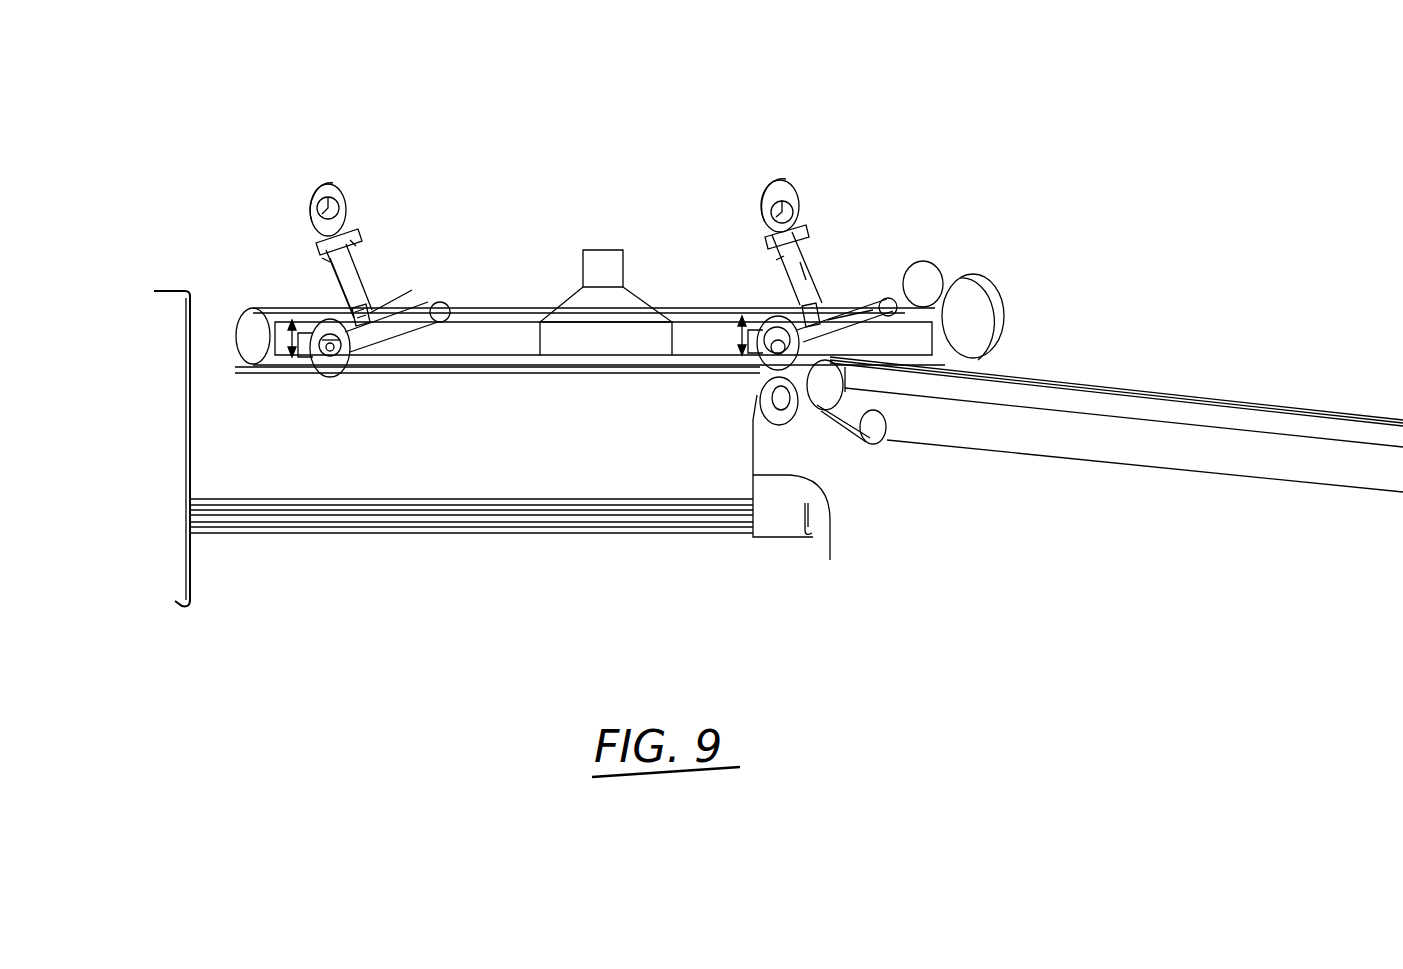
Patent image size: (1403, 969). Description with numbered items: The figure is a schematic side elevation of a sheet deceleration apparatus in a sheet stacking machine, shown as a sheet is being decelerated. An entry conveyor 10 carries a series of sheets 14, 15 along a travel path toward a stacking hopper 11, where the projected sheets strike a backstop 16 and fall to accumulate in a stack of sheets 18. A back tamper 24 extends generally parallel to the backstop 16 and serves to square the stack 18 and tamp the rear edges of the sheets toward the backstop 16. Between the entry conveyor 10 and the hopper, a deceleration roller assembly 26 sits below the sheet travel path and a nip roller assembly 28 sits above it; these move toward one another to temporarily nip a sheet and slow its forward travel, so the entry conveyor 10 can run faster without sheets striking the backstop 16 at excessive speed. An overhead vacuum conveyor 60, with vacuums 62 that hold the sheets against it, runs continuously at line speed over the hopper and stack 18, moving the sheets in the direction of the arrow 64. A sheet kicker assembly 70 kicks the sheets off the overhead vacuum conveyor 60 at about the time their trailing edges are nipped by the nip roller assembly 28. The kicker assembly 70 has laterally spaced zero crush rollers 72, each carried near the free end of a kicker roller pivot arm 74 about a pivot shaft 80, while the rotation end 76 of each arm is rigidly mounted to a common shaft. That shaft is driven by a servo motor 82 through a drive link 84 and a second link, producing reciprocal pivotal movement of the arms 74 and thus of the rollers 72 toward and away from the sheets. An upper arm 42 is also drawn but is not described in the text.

The entry conveyor 10 is at (1255, 392).
The stacking hopper 11 is at (244, 462).
The sheet 14 is at (390, 378).
The sheet 15 is at (1012, 370).
The backstop 16 is at (186, 362).
The stack of sheets 18 is at (345, 535).
The back tamper 24 is at (830, 560).
The deceleration roller assembly 26 is at (793, 411).
The nip roller assembly 28 is at (778, 318).
The actuator arm 42 is at (782, 178).
The overhead vacuum conveyor 60 is at (602, 355).
The vacuum 62 is at (604, 250).
The arrow 64 is at (637, 388).
The sheet kicker assembly 70 is at (372, 306).
The roller 72 is at (318, 366).
The kicker roller pivot arm 74 is at (415, 338).
The rotation end 76 is at (446, 304).
The pivot shaft 80 is at (330, 376).
The servo motor 82 is at (340, 185).
The drive link 84 is at (333, 280).